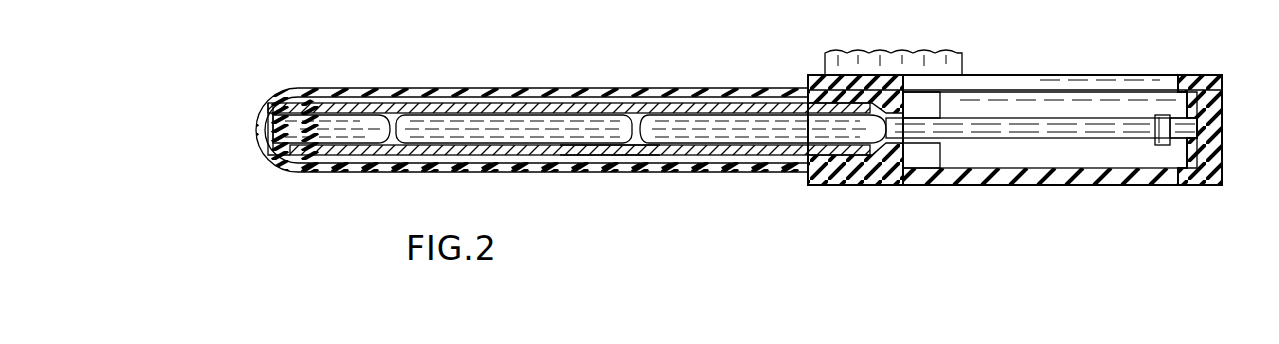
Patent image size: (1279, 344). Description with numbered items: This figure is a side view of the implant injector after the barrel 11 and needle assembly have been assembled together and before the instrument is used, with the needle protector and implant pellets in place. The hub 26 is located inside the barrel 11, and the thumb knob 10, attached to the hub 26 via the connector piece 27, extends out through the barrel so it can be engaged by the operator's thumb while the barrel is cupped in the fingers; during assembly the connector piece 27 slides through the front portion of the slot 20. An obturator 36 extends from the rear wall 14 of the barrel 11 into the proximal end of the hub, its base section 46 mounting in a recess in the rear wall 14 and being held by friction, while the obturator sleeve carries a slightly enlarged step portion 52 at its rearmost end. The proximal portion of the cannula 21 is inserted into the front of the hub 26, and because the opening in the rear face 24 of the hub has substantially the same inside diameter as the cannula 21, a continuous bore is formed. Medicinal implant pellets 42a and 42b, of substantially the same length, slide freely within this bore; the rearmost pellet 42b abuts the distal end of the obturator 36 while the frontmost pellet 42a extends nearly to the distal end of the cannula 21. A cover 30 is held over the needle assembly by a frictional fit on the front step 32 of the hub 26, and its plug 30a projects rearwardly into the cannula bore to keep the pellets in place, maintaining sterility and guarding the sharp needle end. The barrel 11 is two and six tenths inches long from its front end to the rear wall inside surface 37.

The thumb knob 10 is at (957, 43).
The barrel 11 is at (1036, 214).
The rear wall 14 is at (1223, 95).
The slot 20 is at (1052, 78).
The cannula 21 is at (610, 149).
The rear face of hub 24 is at (918, 158).
The hub 26 is at (887, 160).
The connector piece 27 is at (872, 73).
The cover 30 is at (345, 97).
The plug 30a is at (300, 130).
The front step 32 is at (782, 182).
The obturator 36 is at (1105, 115).
The rear wall inside surface 37 is at (1187, 157).
The frontmost implant pellet 42a is at (462, 128).
The rearmost implant pellet 42b is at (700, 128).
The base section 46 is at (1194, 130).
The step portion 52 is at (1162, 142).